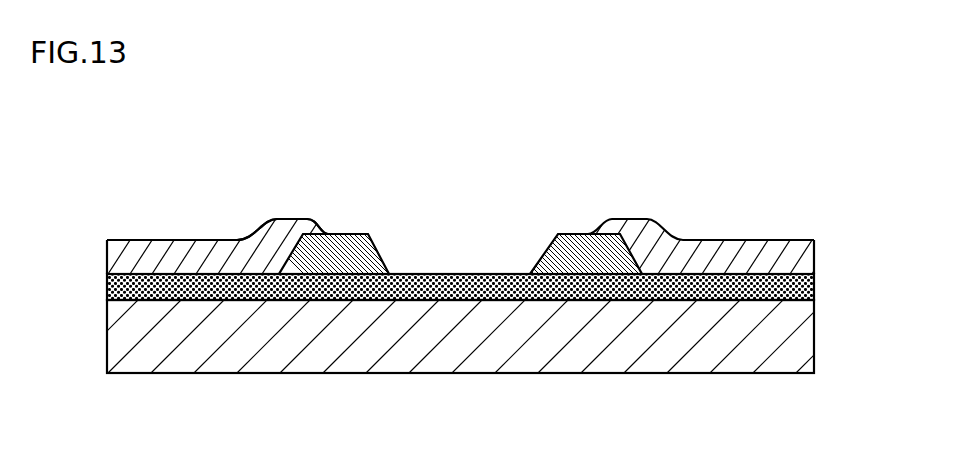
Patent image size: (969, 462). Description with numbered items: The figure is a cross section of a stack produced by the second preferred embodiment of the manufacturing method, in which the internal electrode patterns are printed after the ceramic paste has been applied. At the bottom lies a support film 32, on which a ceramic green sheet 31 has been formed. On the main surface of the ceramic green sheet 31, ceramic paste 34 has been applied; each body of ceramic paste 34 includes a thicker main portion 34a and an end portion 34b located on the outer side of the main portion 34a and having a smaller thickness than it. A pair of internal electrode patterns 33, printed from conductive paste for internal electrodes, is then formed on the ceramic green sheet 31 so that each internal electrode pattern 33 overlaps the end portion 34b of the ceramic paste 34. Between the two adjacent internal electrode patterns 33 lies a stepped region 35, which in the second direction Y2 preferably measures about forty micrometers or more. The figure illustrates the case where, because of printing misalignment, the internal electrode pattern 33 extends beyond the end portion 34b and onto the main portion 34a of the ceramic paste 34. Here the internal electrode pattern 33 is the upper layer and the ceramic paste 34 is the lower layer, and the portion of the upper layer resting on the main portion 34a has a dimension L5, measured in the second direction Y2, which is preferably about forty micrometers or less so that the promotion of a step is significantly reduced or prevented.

The ceramic green sheet 31 is at (814, 288).
The support film 32 is at (814, 342).
The internal electrode pattern 33 is at (173, 239).
The ceramic paste 34 is at (573, 235).
The main portion 34a is at (350, 235).
The end portion 34b is at (384, 254).
The stepped region 35 is at (493, 263).
The dimension L5 is at (331, 234).
The second direction Y2 is at (93, 426).